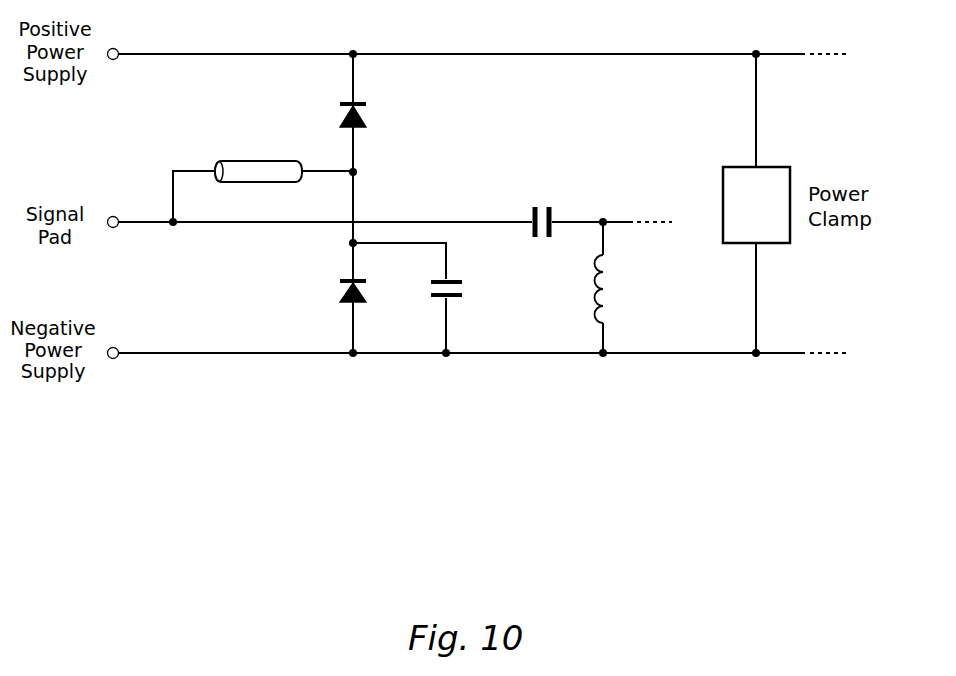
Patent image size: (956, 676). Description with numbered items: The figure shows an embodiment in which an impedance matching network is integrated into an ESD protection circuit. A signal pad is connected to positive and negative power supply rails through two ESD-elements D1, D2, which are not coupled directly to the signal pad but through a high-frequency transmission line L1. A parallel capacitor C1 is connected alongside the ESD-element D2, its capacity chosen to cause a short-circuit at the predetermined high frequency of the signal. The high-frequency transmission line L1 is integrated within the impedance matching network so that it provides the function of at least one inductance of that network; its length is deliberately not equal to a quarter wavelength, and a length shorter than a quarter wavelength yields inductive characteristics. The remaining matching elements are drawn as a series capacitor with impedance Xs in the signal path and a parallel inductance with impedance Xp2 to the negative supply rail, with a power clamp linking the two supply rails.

The ESD-element D1 is at (372, 118).
The ESD-element D2 is at (372, 292).
The high-frequency transmission line L1 is at (263, 179).
The parallel capacitor C1 is at (428, 298).
The capacitor impedance Xs is at (603, 206).
The inductance impedance Xp2 is at (623, 287).